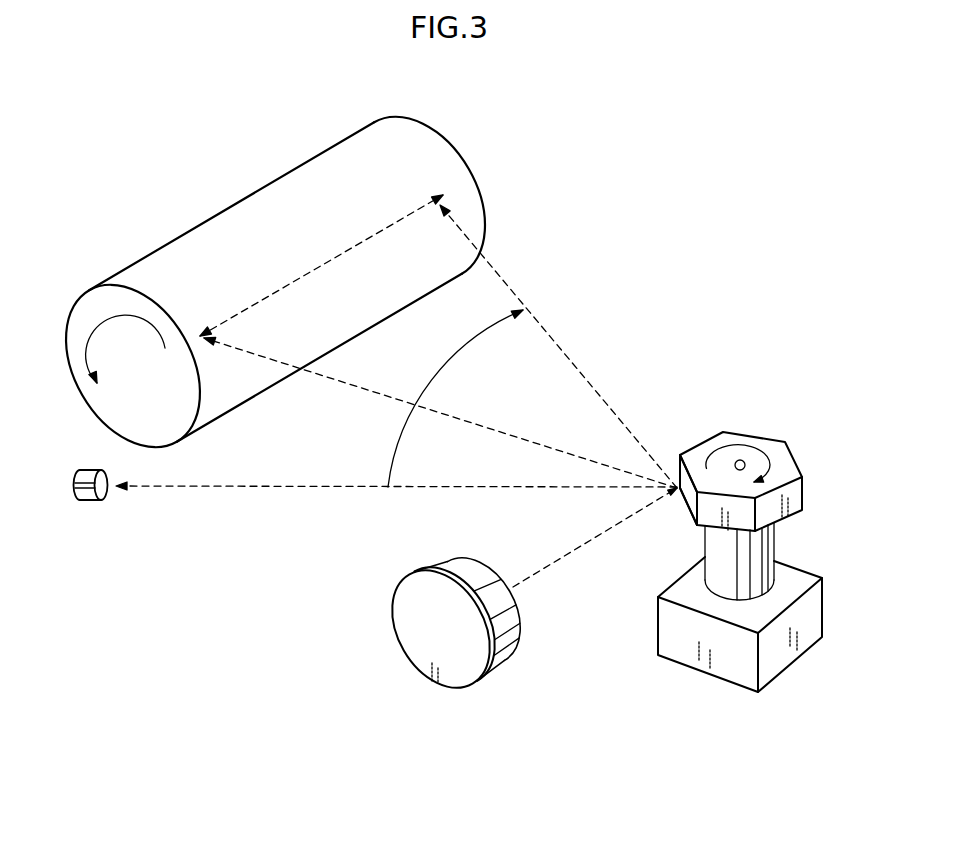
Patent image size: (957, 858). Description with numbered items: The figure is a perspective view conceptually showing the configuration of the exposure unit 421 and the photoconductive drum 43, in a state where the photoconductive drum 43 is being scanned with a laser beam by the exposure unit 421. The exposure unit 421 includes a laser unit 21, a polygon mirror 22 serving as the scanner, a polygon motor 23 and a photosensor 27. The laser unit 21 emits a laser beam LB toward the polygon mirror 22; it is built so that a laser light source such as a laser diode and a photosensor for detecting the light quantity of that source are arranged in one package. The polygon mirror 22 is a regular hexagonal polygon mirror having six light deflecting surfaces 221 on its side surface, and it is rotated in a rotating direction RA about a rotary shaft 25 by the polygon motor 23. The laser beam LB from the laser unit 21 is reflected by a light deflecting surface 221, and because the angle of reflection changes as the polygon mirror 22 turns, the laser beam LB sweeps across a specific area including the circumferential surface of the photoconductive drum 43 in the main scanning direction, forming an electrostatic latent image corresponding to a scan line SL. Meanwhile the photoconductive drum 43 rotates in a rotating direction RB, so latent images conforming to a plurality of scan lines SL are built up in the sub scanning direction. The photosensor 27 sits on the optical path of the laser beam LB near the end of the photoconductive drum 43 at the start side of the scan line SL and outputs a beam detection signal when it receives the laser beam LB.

The exposure unit 421 is at (701, 233).
The photoconductive drum 43 is at (102, 300).
The rotating direction RB is at (90, 340).
The scan line SL is at (325, 260).
The laser beam LB is at (541, 318).
The polygon mirror 22 is at (786, 465).
The light deflecting surface 221 is at (684, 505).
The rotary shaft 25 is at (738, 459).
The rotating direction RA is at (767, 441).
The polygon motor 23 is at (793, 637).
The laser unit 21 is at (403, 657).
The photosensor 27 is at (83, 505).